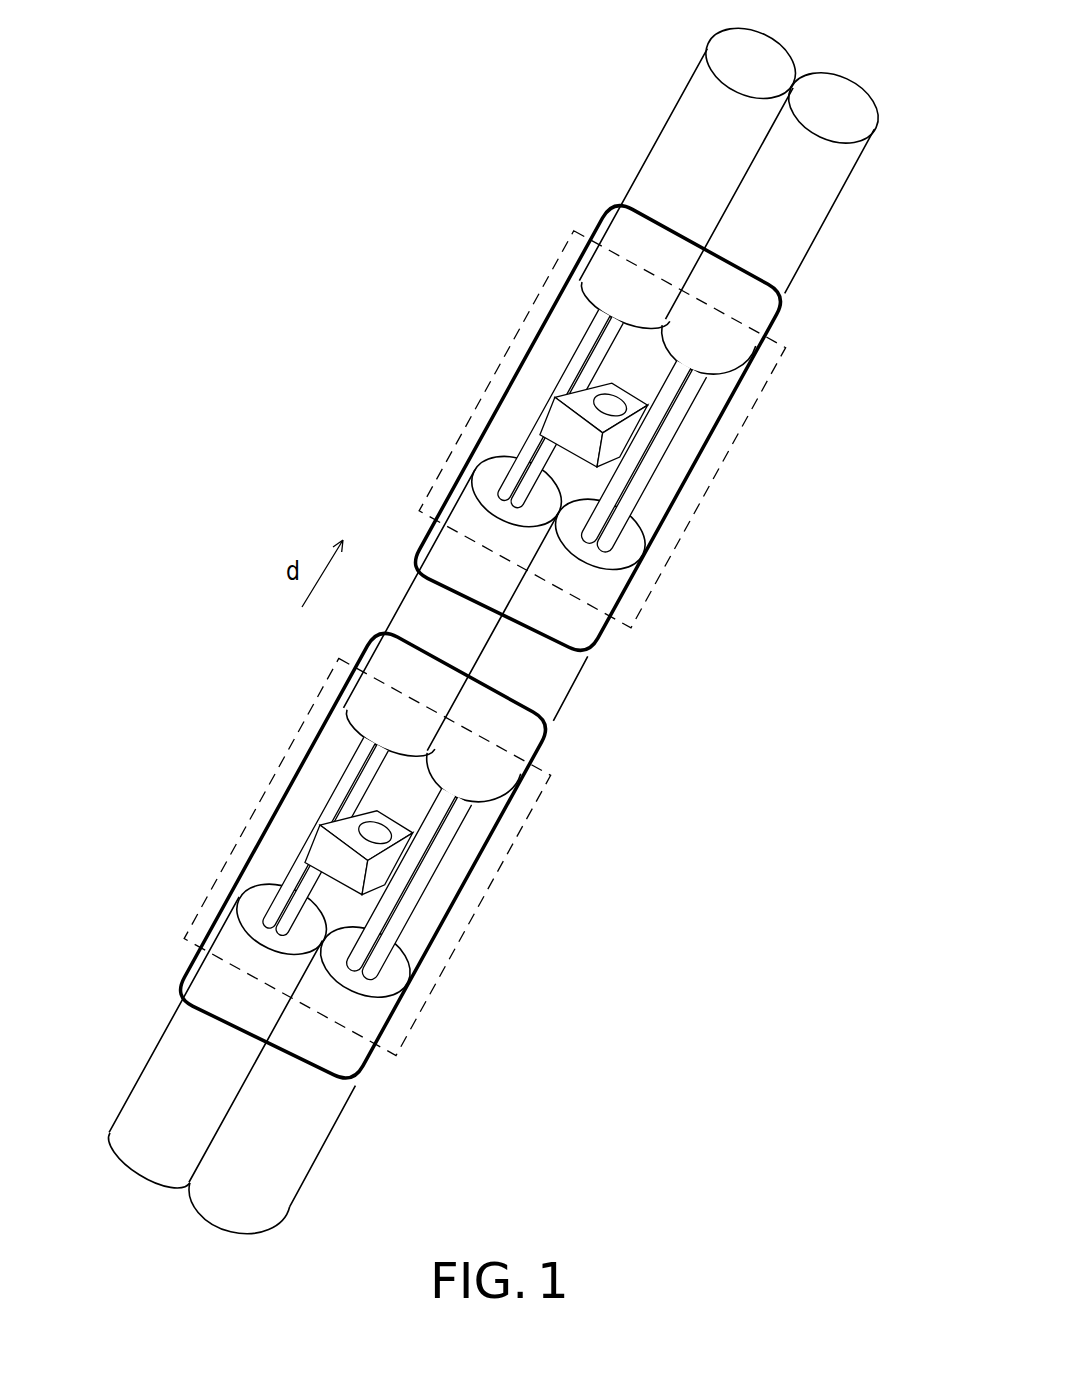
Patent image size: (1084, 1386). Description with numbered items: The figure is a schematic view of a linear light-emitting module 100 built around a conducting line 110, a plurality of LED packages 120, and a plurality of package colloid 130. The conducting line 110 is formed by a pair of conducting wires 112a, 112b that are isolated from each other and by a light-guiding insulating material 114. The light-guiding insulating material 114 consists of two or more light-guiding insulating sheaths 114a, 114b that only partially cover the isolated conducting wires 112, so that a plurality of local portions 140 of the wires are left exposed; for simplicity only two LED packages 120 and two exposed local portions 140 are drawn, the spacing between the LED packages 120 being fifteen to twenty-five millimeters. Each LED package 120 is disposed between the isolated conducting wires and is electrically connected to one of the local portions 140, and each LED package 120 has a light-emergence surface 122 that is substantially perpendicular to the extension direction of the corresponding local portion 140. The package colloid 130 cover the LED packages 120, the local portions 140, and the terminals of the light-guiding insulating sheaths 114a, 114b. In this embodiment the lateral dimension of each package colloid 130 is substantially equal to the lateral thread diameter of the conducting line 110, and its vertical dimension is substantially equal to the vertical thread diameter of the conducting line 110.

The linear light-emitting module 100 is at (497, 631).
The conducting line 110 is at (497, 631).
The conducting wires 112 is at (484, 647).
The conducting wire 112a is at (292, 893).
The conducting wire 112b is at (373, 960).
The light-guiding insulating material 114 is at (497, 631).
The light-guiding insulating sheath 114a is at (217, 1073).
The light-guiding insulating sheath 114b is at (317, 1093).
The LED package 120 is at (565, 428).
The light-emergence surface 122 is at (628, 403).
The package colloid 130 is at (570, 278).
The local portion 140 is at (689, 528).